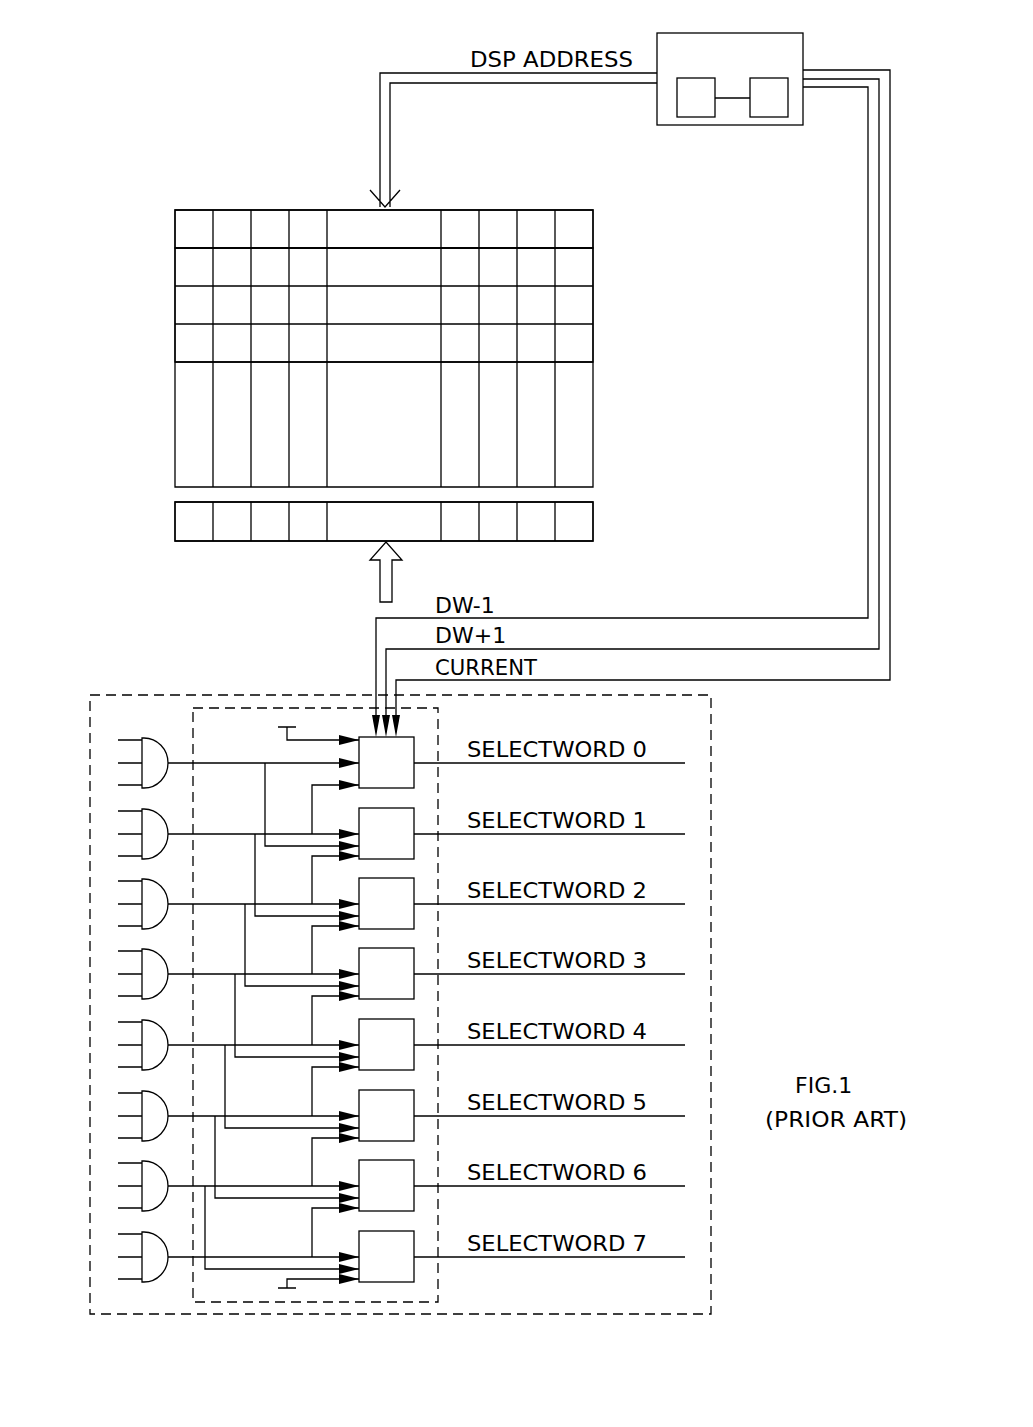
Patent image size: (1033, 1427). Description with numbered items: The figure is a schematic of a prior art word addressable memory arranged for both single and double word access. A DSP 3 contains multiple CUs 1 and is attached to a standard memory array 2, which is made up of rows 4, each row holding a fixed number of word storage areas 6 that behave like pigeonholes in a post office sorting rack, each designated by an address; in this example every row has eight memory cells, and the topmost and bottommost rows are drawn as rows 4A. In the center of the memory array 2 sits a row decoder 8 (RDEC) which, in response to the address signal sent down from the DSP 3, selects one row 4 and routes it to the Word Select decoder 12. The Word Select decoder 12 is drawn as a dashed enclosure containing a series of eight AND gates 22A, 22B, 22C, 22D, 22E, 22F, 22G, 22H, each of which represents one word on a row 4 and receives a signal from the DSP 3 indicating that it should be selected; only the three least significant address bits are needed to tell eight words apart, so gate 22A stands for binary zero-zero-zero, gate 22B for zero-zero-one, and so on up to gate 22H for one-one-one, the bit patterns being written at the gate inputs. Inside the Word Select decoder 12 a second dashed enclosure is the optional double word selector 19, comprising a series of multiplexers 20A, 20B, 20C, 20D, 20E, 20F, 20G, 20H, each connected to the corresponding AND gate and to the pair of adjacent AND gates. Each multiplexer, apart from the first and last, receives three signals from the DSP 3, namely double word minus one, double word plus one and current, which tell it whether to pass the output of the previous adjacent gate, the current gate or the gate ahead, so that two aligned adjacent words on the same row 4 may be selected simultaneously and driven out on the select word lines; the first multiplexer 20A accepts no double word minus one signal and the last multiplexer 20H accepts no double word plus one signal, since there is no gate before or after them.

The CU 1 is at (695, 125).
The standard memory array 2 is at (178, 380).
The DSP 3 is at (803, 53).
The rows 4 is at (593, 345).
The memory row 4A is at (593, 230).
The word storage areas 6 is at (263, 210).
The row decoder (RDEC) 8 is at (410, 215).
The Word Select (WS) decoder 12 is at (711, 925).
The double word selector 19 is at (360, 1302).
The multiplexer (Mux) 20A is at (386, 762).
The multiplexer (Mux) 20B is at (386, 833).
The multiplexer (Mux) 20C is at (386, 903).
The multiplexer (Mux) 20D is at (386, 973).
The multiplexer (Mux) 20E is at (386, 1044).
The multiplexer (Mux) 20F is at (386, 1115).
The multiplexer (Mux) 20G is at (386, 1185).
The multiplexer (Mux) 20H is at (386, 1256).
The AND gate 22A is at (145, 755).
The AND gate 22B is at (145, 826).
The AND gate 22C is at (145, 896).
The AND gate 22D is at (145, 966).
The AND gate 22E is at (145, 1037).
The AND gate 22F is at (145, 1108).
The AND gate 22G is at (145, 1178).
The AND gate 22H is at (145, 1249).